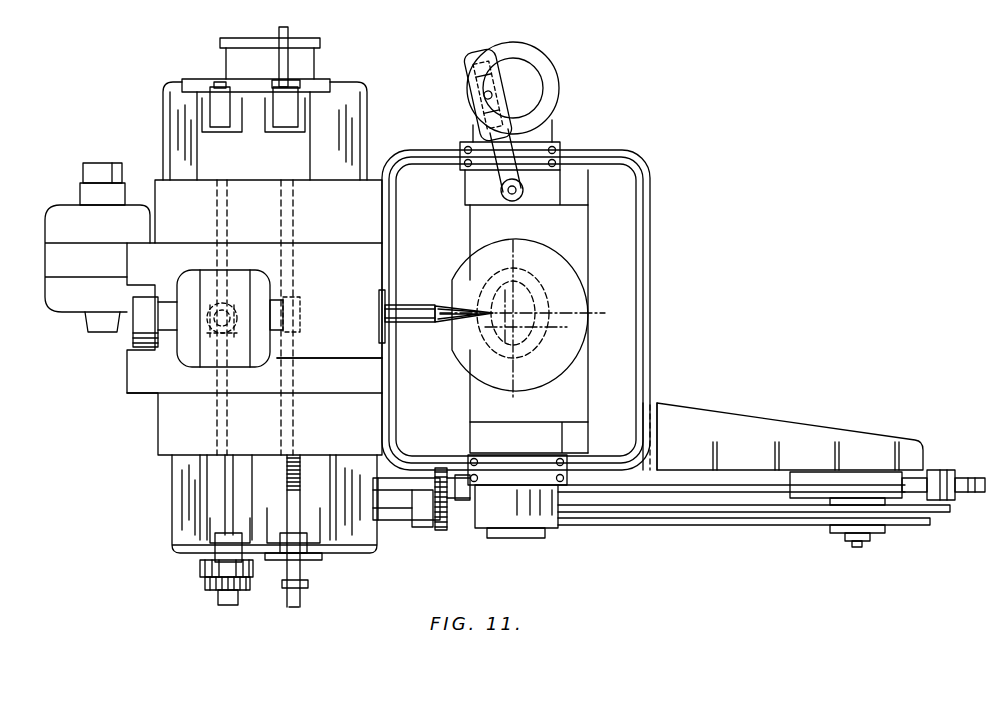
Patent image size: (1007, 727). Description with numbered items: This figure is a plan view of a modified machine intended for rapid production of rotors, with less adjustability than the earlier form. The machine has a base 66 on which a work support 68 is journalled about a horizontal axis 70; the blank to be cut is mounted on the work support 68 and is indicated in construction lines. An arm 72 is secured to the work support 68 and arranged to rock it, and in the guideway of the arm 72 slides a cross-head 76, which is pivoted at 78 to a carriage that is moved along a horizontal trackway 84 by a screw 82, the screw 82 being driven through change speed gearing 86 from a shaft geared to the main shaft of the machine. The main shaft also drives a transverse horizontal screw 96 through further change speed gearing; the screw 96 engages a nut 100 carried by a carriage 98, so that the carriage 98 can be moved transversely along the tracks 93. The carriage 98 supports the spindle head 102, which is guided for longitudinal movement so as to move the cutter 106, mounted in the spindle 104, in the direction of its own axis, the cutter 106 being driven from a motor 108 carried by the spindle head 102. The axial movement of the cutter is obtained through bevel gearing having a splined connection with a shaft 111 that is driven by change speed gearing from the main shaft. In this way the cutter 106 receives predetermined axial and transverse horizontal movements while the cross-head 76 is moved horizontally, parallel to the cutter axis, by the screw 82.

The base 66 is at (653, 340).
The work support 68 is at (583, 392).
The horizontal axis 70 is at (518, 540).
The arm 72 is at (778, 520).
The cross-head 76 is at (885, 532).
The pivot 78 is at (858, 540).
The screw 82 is at (965, 490).
The horizontal trackway 84 is at (738, 485).
The change speed gearing 86 is at (444, 528).
The tracks 93 is at (175, 484).
The transverse horizontal screw 96 is at (288, 482).
The carriage 98 is at (322, 229).
The nut 100 is at (300, 317).
The spindle head 102 is at (318, 356).
The spindle 104 is at (408, 298).
The cutter 106 is at (448, 328).
The motor 108 is at (190, 350).
The shaft 111 is at (225, 490).